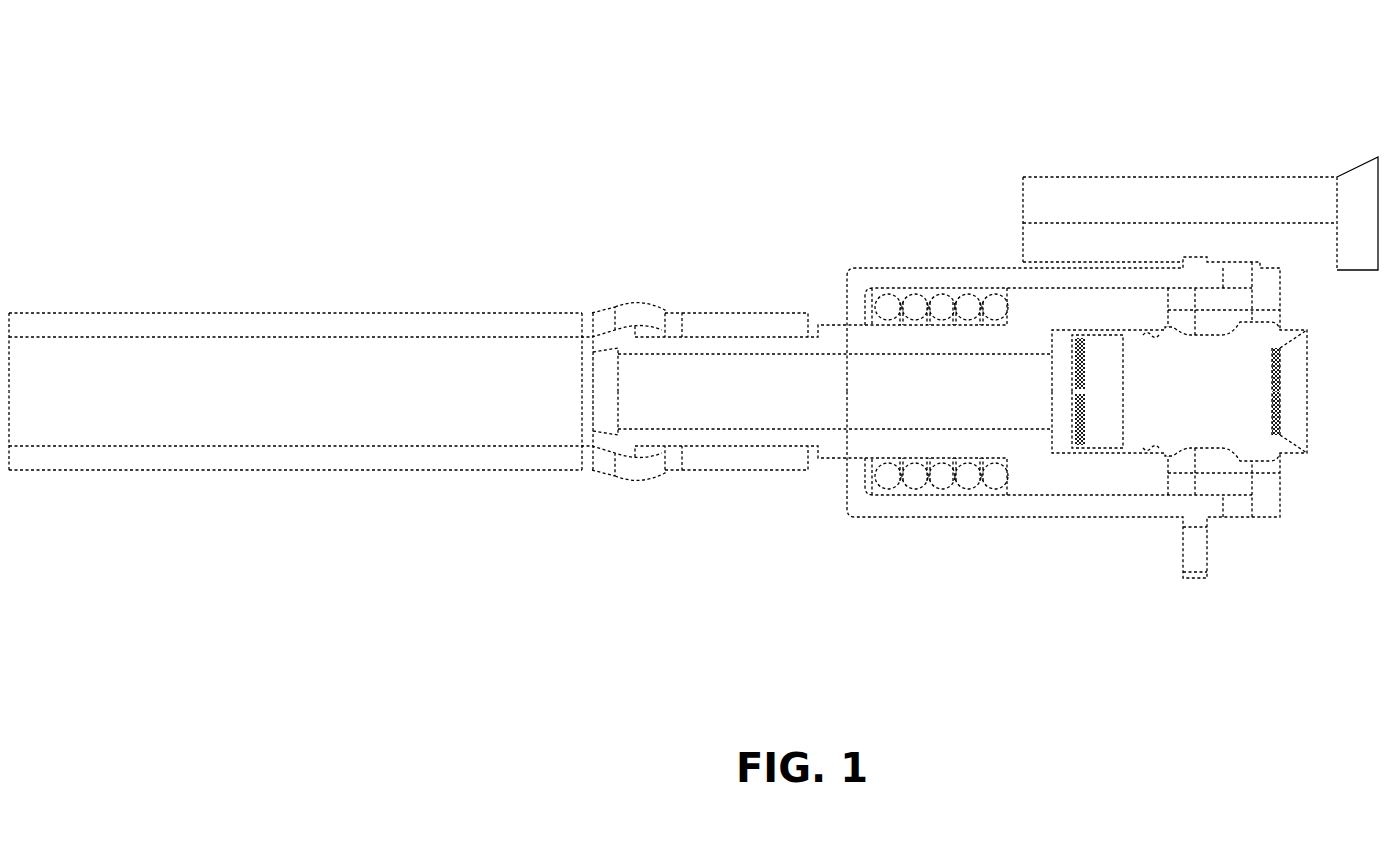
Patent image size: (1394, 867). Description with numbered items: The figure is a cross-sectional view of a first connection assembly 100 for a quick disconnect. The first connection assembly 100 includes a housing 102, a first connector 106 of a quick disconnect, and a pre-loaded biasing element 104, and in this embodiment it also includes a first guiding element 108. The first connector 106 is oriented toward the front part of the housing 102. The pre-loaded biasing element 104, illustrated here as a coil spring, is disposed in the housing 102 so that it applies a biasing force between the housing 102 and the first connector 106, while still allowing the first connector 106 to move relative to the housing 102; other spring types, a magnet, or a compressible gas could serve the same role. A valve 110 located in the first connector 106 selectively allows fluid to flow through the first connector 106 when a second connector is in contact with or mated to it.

The first connection assembly 100 is at (667, 218).
The housing 102 is at (890, 503).
The pre-loaded biasing element 104 is at (952, 480).
The first connector of a quick disconnect 106 is at (743, 442).
The first guiding element 108 is at (1317, 188).
The valve 110 is at (1288, 452).